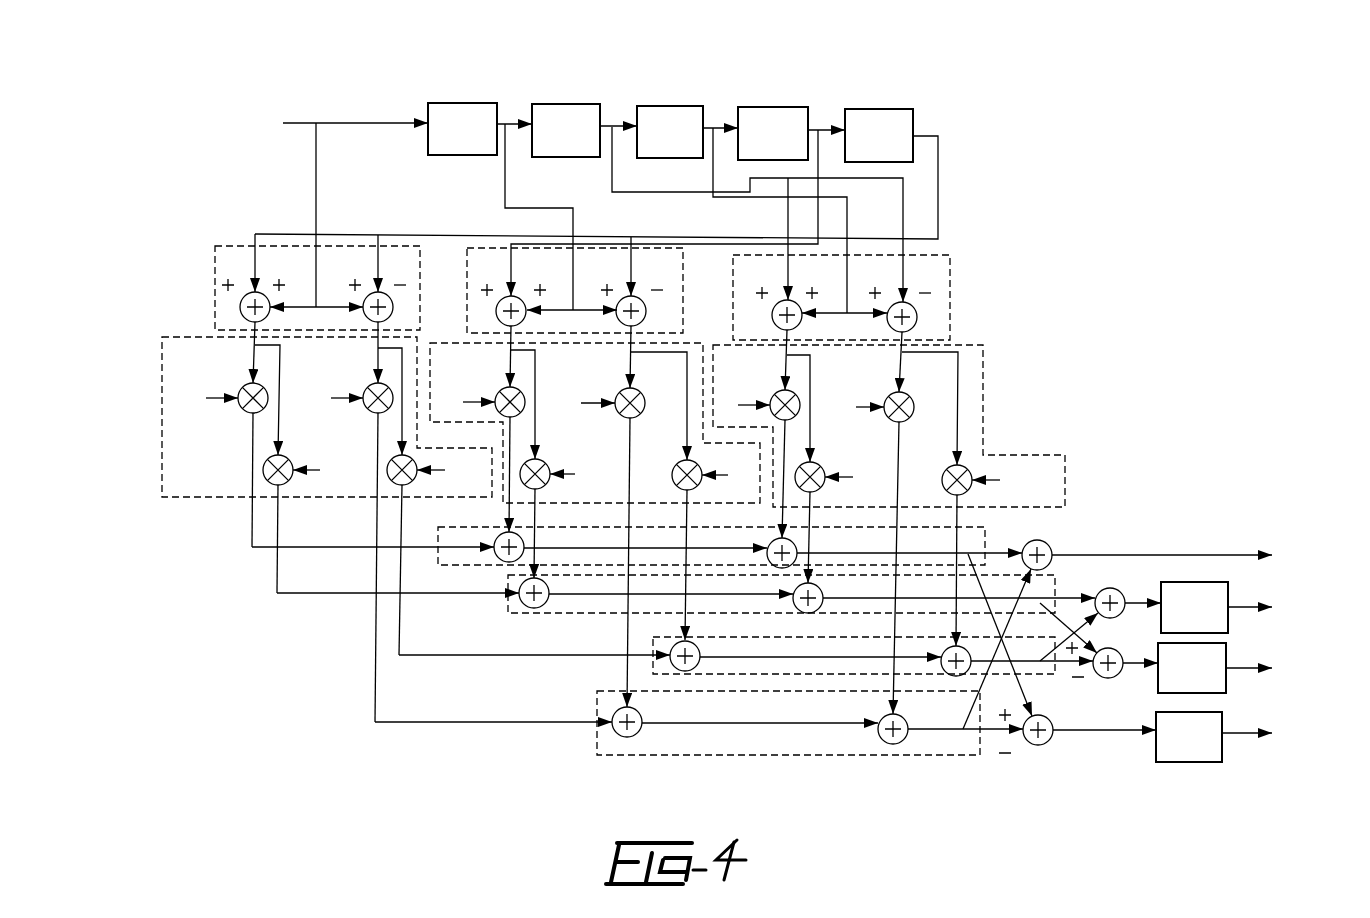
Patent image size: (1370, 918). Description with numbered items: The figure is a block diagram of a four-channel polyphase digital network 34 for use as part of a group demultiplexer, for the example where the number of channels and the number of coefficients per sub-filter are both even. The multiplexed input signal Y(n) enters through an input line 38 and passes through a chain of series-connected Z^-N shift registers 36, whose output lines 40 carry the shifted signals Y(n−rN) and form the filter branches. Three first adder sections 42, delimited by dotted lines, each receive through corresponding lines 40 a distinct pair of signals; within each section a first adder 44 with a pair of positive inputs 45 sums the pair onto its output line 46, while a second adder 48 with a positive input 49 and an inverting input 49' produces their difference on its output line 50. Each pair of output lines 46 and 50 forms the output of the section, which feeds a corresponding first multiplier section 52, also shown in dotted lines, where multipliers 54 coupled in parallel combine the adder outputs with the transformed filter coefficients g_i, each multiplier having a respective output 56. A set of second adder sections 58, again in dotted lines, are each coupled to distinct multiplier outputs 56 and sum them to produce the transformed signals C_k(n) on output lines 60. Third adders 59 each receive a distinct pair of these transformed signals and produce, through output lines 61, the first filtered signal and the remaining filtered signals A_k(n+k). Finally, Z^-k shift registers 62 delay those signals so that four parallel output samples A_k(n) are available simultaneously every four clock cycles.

The polyphase digital network 34 is at (716, 433).
The Z^-N shift registers 36 is at (882, 109).
The input line 38 is at (308, 122).
The output lines 40 is at (505, 166).
The first adder sections 42 is at (284, 246).
The first adder 44 is at (241, 298).
The positive inputs 45 is at (279, 280).
The output line 46 is at (246, 320).
The second adder 48 is at (393, 307).
The positive input 49 is at (615, 250).
The inverting input 49' is at (662, 250).
The output line 50 is at (376, 335).
The first multiplier sections 52 is at (160, 470).
The multipliers 54 is at (243, 410).
The multiplier outputs 56 is at (270, 487).
The second adder sections 58 is at (653, 645).
The third adders 59 is at (1052, 543).
The output lines 60 is at (985, 554).
The output lines 61 is at (1132, 600).
The Z^-k shift registers 62 is at (1192, 582).